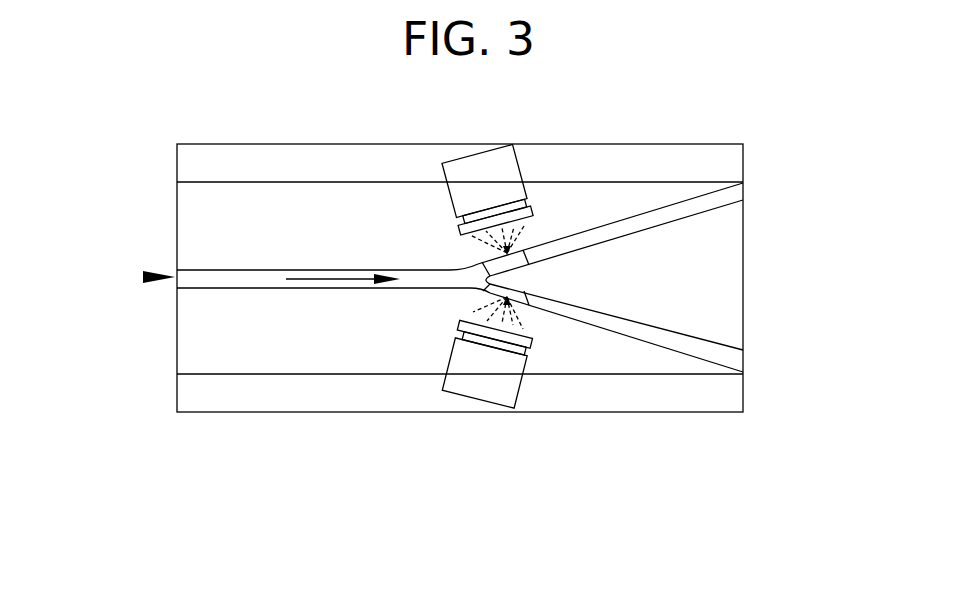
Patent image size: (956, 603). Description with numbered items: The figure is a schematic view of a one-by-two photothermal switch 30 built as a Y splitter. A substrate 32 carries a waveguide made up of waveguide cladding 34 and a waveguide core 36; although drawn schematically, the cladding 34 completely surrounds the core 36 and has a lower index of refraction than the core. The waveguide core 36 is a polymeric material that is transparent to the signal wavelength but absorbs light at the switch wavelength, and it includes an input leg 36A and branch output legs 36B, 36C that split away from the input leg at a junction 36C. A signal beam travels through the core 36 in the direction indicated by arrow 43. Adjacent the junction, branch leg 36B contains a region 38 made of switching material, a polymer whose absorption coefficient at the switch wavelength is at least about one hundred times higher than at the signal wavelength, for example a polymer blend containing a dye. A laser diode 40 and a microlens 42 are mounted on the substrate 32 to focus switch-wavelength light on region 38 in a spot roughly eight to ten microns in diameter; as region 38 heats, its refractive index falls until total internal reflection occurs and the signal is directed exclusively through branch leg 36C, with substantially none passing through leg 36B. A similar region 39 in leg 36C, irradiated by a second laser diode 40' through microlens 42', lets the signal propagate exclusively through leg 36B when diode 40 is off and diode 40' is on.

The photothermal switch 30 is at (143, 277).
The substrate 32 is at (748, 161).
The waveguide cladding 34 is at (177, 337).
The waveguide core 36 is at (447, 295).
The input leg 36A is at (226, 290).
The branch output leg 36B is at (688, 218).
The branch output leg 36C is at (700, 338).
The region of switching material 38 is at (525, 266).
The region of switching material 39 is at (525, 286).
The laser diode 40 is at (435, 160).
The laser diode 40' is at (522, 393).
The microlens 42 is at (553, 183).
The microlens 42' is at (528, 332).
The arrow 43 is at (321, 290).